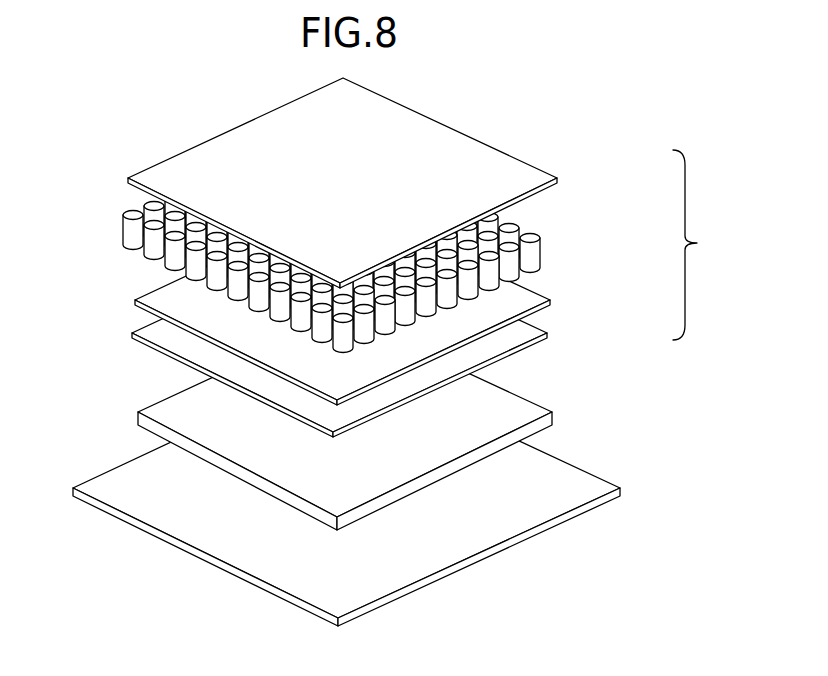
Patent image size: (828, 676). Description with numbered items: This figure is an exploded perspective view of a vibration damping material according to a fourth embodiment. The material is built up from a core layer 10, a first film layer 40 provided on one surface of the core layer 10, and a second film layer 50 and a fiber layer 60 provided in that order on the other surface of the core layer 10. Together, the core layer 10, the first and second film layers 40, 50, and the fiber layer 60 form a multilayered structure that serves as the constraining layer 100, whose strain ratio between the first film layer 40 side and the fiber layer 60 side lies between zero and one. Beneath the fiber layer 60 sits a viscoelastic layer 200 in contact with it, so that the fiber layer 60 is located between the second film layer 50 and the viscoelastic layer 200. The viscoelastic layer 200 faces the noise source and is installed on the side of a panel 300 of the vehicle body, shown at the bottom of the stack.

The core layer 10 is at (540, 252).
The first film layer 40 is at (557, 182).
The second film layer 50 is at (550, 303).
The fiber layer 60 is at (548, 336).
The constraining layer 100 is at (716, 245).
The viscoelastic layer 200 is at (553, 414).
The panel 300 is at (600, 507).